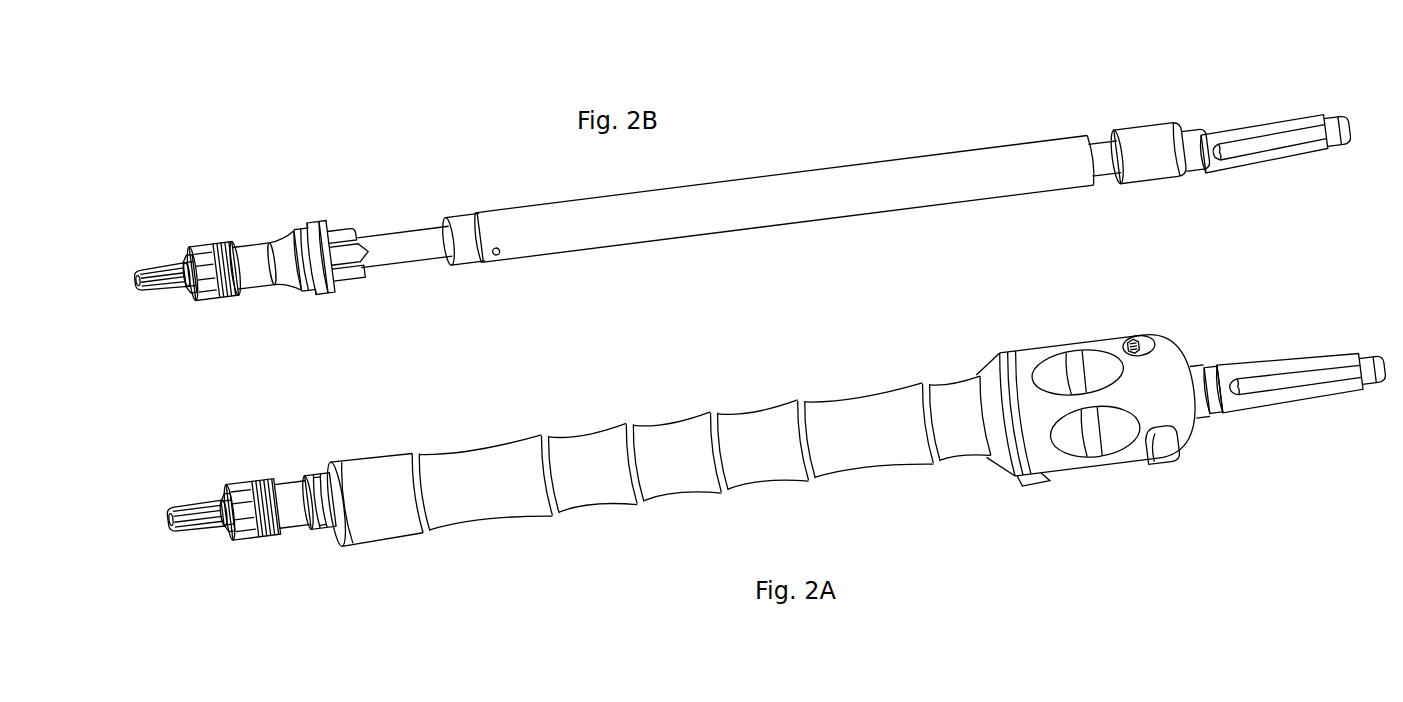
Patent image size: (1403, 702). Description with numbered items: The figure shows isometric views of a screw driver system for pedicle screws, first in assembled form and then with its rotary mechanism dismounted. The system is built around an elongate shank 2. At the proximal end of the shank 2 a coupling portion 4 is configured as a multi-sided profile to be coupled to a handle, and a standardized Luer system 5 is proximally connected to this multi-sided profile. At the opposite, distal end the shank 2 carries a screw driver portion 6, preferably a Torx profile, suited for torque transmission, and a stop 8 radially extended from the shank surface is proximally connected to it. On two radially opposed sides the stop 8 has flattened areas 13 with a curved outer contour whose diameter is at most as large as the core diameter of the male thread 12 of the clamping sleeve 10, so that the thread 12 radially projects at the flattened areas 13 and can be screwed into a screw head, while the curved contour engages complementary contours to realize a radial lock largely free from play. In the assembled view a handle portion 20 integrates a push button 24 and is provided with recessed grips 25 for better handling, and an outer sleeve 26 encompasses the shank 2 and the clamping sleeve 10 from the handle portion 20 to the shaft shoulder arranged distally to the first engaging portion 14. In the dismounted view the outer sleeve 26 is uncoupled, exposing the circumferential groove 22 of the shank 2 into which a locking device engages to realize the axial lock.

In FIG. 2B, the shank 2 is at (823, 167).
In FIG. 2B, the coupling portion 4 is at (1258, 117).
In FIG. 2B, the Luer system 5 is at (1352, 127).
In FIG. 2B, the screw driver portion 6 is at (158, 293).
In FIG. 2A, the screw driver portion 6 is at (192, 534).
In FIG. 2B, the stop 8 is at (197, 300).
In FIG. 2A, the stop 8 is at (228, 541).
In FIG. 2A, the clamping sleeve 10 is at (285, 483).
In FIG. 2A, the male thread 12 is at (257, 486).
In FIG. 2B, the flattened areas 13 is at (193, 246).
In FIG. 2B, the first engaging portion 14 is at (338, 222).
In FIG. 2A, the handle portion 20 is at (1055, 478).
In FIG. 2B, the circumferential groove 22 is at (1100, 135).
In FIG. 2A, the push button 24 is at (1150, 468).
In FIG. 2A, the recessed grips 25 is at (1078, 378).
In FIG. 2A, the outer sleeve 26 is at (662, 423).